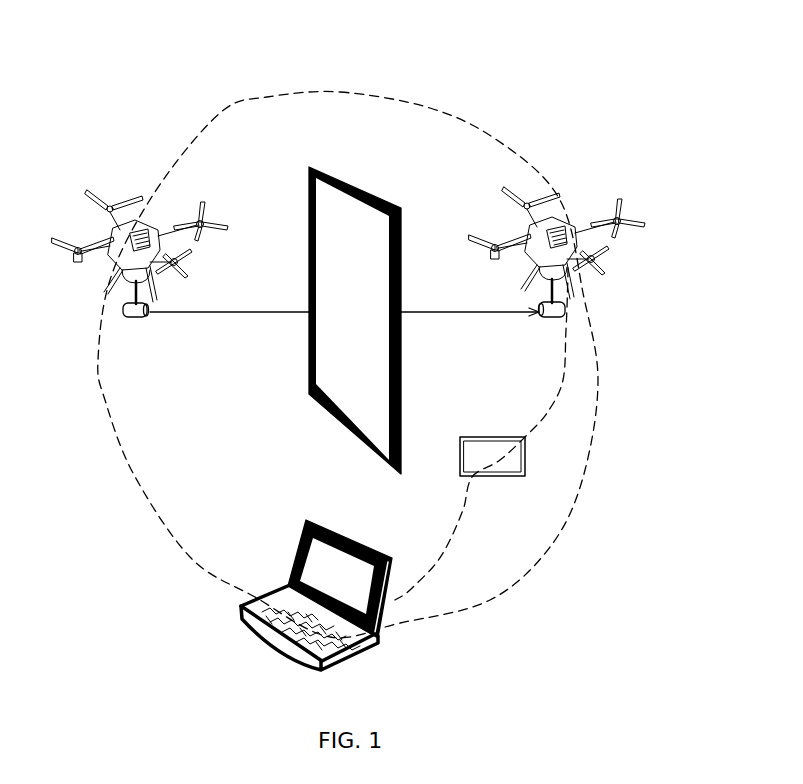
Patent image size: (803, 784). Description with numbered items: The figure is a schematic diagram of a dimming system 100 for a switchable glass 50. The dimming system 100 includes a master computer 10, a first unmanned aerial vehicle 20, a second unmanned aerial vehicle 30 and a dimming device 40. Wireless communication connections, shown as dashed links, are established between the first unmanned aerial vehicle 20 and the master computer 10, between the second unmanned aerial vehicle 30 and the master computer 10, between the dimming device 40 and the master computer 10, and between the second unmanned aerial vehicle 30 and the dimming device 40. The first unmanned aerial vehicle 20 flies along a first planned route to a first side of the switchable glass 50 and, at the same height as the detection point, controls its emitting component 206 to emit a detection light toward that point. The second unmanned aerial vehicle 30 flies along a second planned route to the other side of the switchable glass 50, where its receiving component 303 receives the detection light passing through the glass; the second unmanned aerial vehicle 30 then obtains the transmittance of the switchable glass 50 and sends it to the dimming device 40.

The dimming system 100 is at (337, 46).
The master computer 10 is at (347, 540).
The first unmanned aerial vehicle 20 is at (140, 268).
The second unmanned aerial vehicle 30 is at (557, 265).
The dimming device 40 is at (468, 437).
The switchable glass 50 is at (357, 180).
The emitting component 206 is at (138, 320).
The receiving component 303 is at (542, 321).